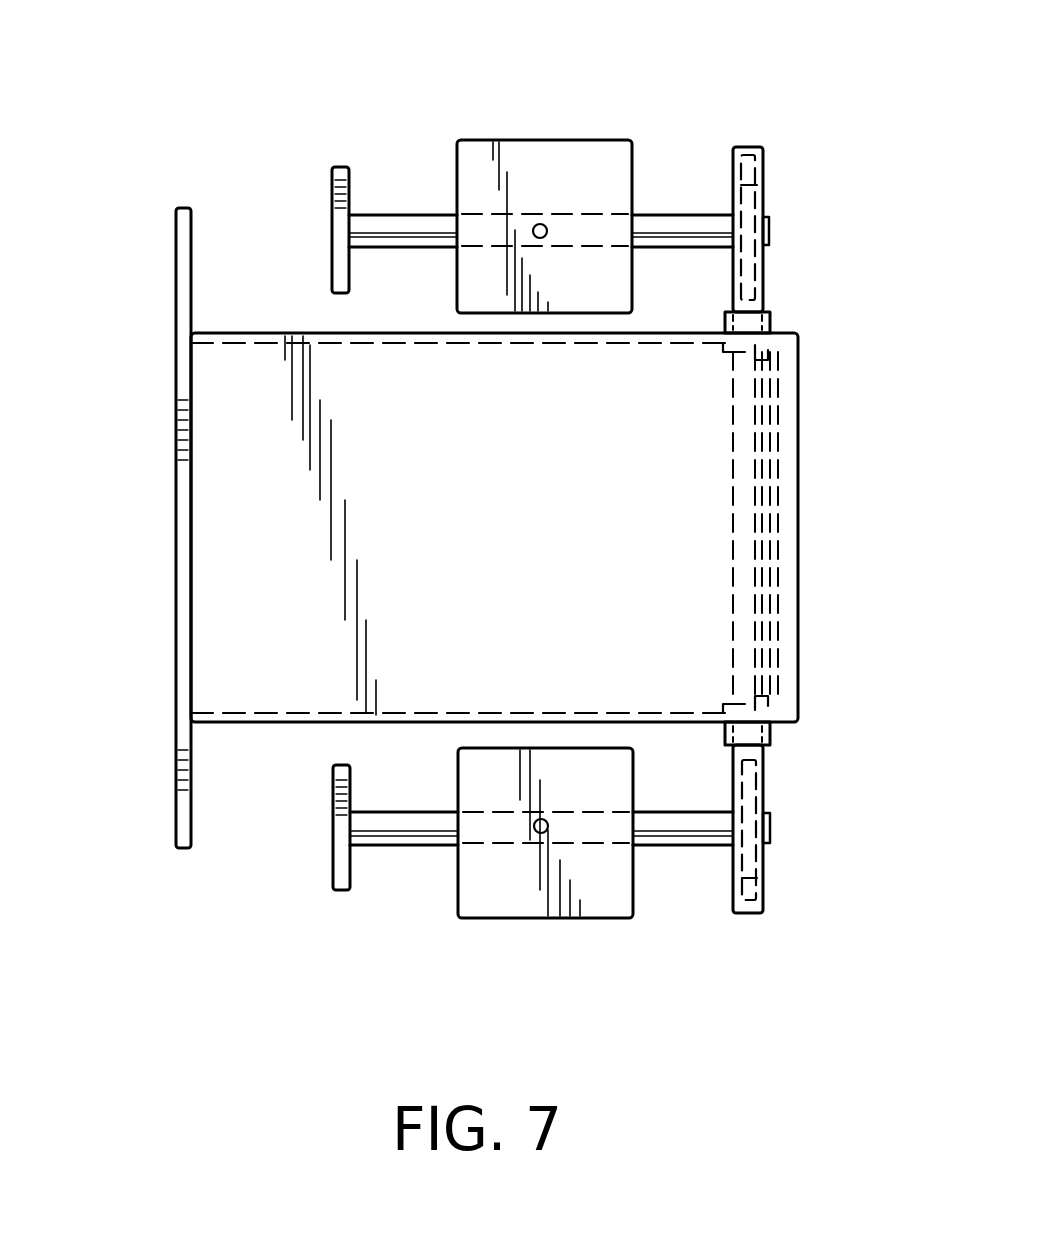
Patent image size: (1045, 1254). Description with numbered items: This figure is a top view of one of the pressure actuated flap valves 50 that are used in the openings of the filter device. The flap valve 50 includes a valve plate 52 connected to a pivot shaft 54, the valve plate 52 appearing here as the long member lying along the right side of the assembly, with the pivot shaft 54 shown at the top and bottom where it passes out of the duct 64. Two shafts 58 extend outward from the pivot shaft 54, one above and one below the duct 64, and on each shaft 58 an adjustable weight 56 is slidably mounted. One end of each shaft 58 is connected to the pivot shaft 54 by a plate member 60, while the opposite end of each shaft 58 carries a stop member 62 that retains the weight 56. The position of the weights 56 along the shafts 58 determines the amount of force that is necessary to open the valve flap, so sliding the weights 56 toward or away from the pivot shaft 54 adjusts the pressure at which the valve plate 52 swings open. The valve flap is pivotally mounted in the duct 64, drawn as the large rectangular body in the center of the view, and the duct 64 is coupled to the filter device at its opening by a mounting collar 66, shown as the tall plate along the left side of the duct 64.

The flap valve 50 is at (197, 128).
The valve plate 52 is at (773, 517).
The pivot shaft 54 is at (765, 148).
The adjustable weight 56 is at (578, 142).
The shaft 58 is at (420, 215).
The plate member 60 is at (757, 185).
The stop member 62 is at (332, 190).
The duct 64 is at (238, 332).
The mounting collar 66 is at (176, 255).